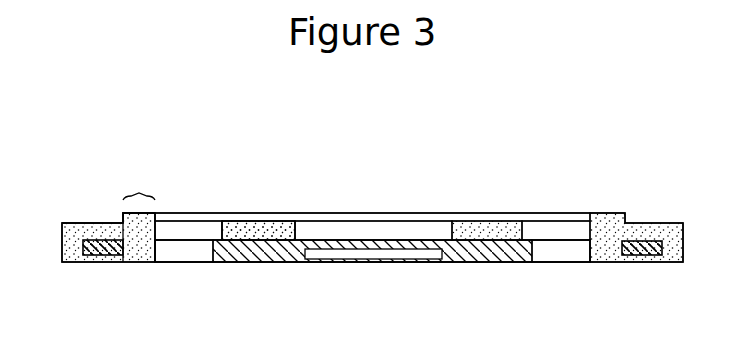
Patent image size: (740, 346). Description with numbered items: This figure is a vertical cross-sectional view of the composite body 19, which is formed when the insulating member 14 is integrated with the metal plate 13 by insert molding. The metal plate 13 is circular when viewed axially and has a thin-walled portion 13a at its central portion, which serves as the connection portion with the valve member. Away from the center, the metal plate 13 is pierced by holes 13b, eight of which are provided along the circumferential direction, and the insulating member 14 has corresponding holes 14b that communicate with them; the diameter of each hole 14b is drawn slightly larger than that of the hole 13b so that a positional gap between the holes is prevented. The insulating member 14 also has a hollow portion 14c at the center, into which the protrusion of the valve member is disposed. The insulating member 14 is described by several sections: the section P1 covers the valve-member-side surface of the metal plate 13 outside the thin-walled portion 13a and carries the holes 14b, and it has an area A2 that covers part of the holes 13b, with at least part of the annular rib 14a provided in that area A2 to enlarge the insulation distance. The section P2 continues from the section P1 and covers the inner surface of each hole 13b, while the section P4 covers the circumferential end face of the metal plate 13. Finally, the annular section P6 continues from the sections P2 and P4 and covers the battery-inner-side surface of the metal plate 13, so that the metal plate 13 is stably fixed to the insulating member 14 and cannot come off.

The composite body 19 is at (60, 115).
The metal plate 13 is at (483, 262).
The thin-walled portion 13a is at (362, 262).
The hole 13b is at (185, 262).
The insulating member 14 is at (487, 224).
The annular rib 14a is at (124, 213).
The hole 14b is at (200, 228).
The hollow portion 14c is at (393, 213).
The area A2 is at (139, 182).
The section P1 is at (90, 230).
The section P2 is at (140, 262).
The section P4 is at (72, 249).
The annular section P6 is at (97, 262).